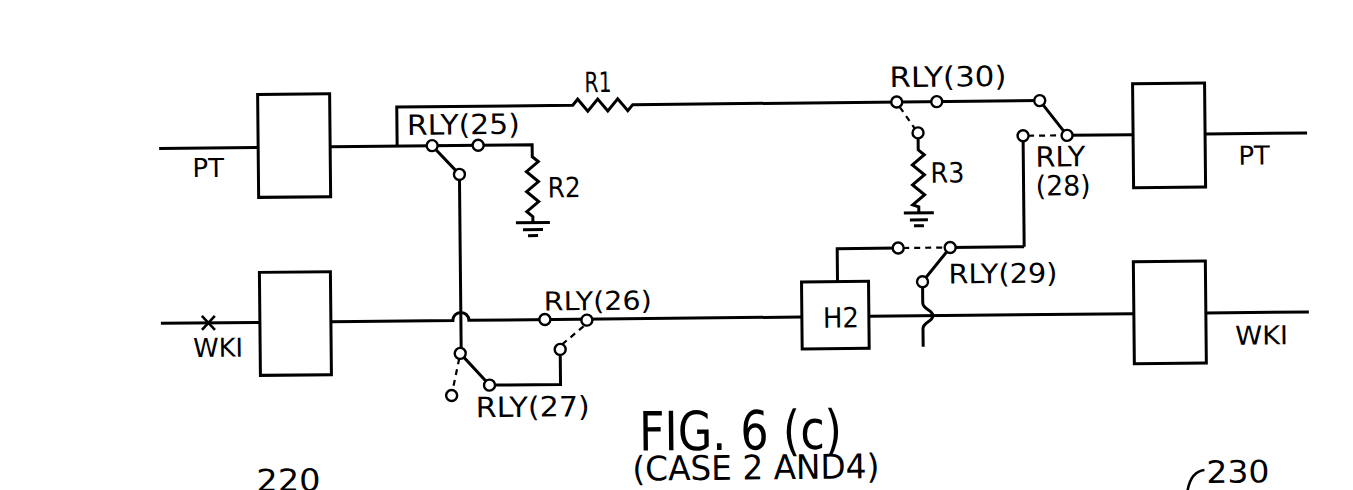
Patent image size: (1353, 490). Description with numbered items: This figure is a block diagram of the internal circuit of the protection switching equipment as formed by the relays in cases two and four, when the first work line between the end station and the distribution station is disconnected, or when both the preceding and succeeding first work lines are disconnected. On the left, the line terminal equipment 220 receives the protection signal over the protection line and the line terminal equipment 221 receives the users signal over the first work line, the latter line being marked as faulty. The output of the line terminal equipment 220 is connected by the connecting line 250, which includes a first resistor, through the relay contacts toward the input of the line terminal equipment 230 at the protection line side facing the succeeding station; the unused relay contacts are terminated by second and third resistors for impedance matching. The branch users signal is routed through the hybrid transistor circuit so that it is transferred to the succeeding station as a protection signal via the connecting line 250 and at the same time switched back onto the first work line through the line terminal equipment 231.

The line terminal equipment 220 is at (269, 89).
The line terminal equipment 221 is at (283, 268).
The line terminal equipment 230 is at (1207, 93).
The line terminal equipment 231 is at (1207, 272).
The connecting line 250 is at (719, 105).